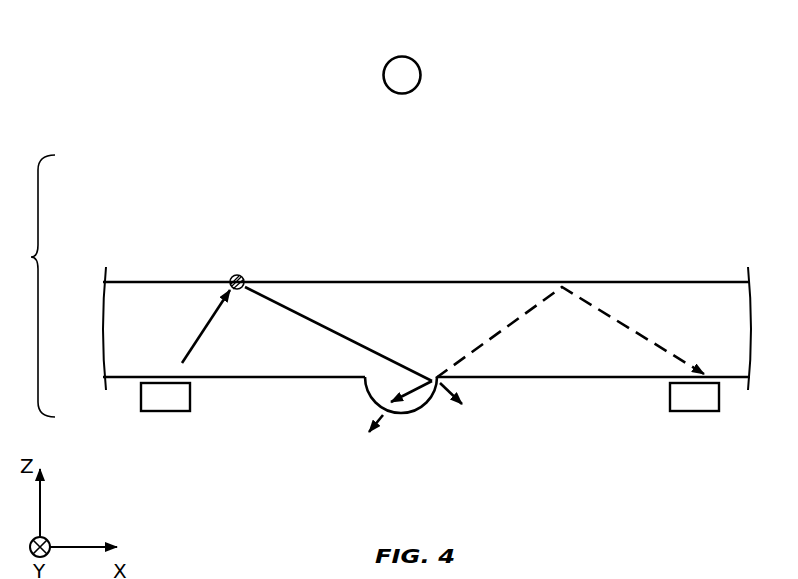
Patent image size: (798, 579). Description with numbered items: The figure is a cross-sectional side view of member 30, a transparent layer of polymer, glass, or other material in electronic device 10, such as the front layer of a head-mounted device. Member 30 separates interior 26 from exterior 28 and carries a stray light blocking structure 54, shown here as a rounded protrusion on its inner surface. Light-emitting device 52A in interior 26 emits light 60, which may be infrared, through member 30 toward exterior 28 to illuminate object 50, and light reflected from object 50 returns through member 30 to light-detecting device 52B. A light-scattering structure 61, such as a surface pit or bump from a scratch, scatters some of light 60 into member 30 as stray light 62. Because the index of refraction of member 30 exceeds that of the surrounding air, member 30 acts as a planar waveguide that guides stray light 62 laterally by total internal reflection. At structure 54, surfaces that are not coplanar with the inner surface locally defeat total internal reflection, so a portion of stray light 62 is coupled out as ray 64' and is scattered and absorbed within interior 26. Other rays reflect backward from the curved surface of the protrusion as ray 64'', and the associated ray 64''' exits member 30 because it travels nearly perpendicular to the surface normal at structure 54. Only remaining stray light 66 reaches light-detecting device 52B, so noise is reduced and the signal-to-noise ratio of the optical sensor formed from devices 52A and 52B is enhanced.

The electronic device 10 is at (30, 286).
The interior 26 is at (560, 470).
The exterior 28 is at (624, 190).
The member 30 is at (693, 290).
The object 50 is at (421, 81).
The light-emitting device 52A is at (165, 411).
The light-detecting device 52B is at (695, 411).
The stray light blocking structure 54 is at (360, 408).
The light 60 is at (207, 333).
The light-scattering structure 61 is at (238, 275).
The stray light 62 is at (338, 332).
The ray 64' is at (487, 398).
The ray 64'' is at (384, 376).
The ray 64''' is at (411, 434).
The remaining stray light 66 is at (518, 312).